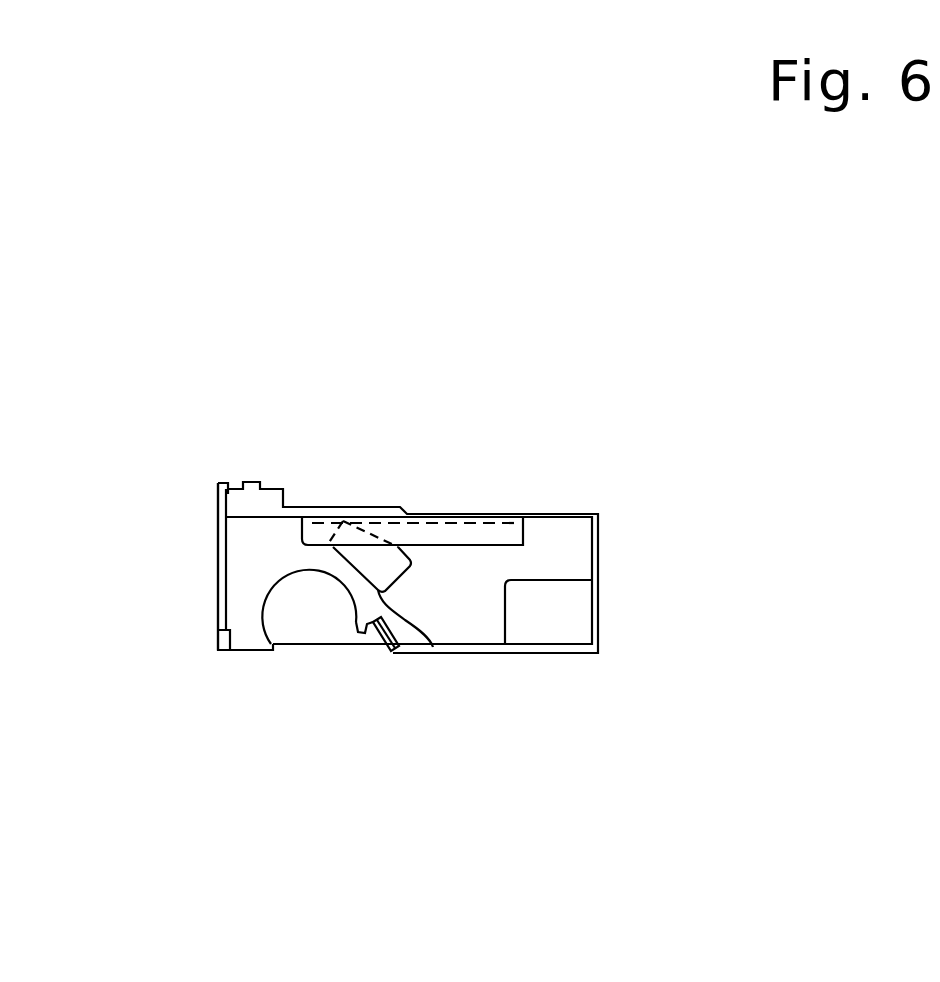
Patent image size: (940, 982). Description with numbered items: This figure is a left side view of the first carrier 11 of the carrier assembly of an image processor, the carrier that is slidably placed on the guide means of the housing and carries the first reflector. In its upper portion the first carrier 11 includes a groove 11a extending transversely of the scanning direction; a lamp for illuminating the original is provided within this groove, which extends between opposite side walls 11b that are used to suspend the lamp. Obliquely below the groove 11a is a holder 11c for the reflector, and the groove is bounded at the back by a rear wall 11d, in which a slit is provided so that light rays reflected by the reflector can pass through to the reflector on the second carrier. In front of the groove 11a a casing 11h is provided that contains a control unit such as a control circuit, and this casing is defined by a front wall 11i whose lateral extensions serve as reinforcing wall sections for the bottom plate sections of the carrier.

The first carrier 11 is at (610, 592).
The groove 11a is at (292, 600).
The side walls 11b is at (323, 557).
The holder 11c is at (427, 636).
The rear wall 11d is at (217, 570).
The casing 11h is at (478, 655).
The front wall 11i is at (593, 543).